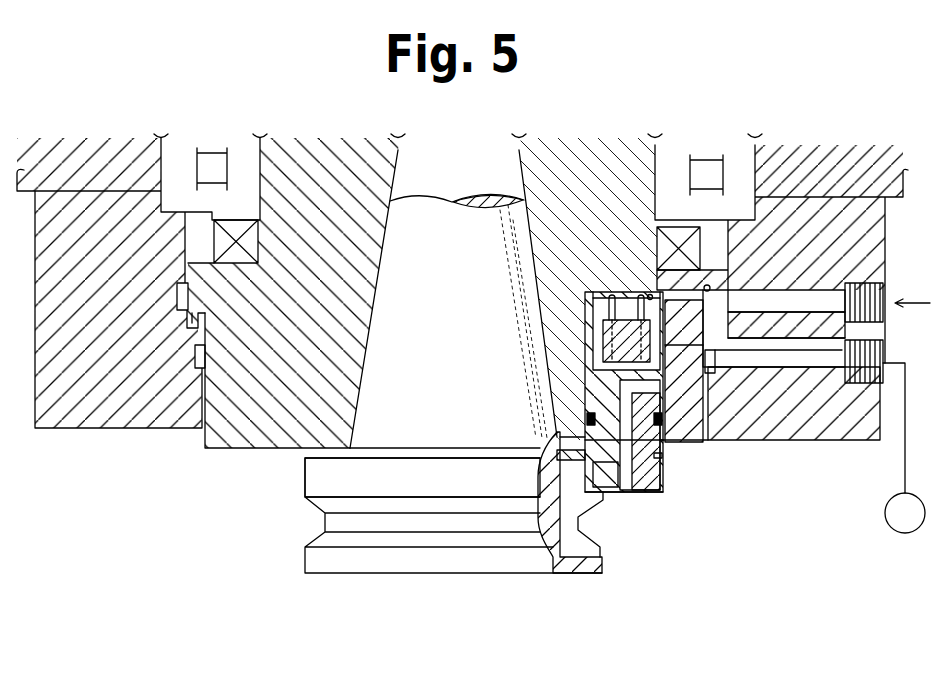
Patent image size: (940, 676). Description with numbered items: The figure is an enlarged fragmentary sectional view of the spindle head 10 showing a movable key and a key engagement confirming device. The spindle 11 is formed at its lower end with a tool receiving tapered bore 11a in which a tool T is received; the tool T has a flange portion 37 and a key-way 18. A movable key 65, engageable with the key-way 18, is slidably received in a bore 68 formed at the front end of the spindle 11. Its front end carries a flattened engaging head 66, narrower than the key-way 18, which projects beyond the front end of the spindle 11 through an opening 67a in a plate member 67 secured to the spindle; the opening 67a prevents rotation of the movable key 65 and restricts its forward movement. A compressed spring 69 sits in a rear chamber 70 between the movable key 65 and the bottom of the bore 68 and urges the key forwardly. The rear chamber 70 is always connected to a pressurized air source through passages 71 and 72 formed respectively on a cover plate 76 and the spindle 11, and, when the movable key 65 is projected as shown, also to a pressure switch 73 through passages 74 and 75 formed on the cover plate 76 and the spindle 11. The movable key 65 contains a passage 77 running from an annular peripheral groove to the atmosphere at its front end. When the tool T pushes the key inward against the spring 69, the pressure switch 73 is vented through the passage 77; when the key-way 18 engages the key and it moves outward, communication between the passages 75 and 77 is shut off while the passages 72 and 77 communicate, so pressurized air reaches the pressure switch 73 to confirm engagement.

The spindle head 10 is at (843, 173).
The spindle 11 is at (243, 427).
The tool receiving tapered bore 11a is at (364, 338).
The key-way 18 is at (563, 527).
The flange portion 37 is at (303, 557).
The tool T is at (352, 573).
The movable key 65 is at (665, 478).
The engaging head 66 is at (650, 492).
The plate member 67 is at (665, 455).
The opening 67a is at (667, 463).
The bore 68 is at (590, 317).
The compressed spring 69 is at (609, 298).
The rear chamber 70 is at (650, 294).
The passage 71 is at (832, 288).
The passage 72 is at (707, 285).
The pressure switch 73 is at (893, 533).
The passage 74 is at (800, 363).
The passage 75 is at (712, 383).
The cover plate 76 is at (845, 415).
The passage 77 is at (627, 493).